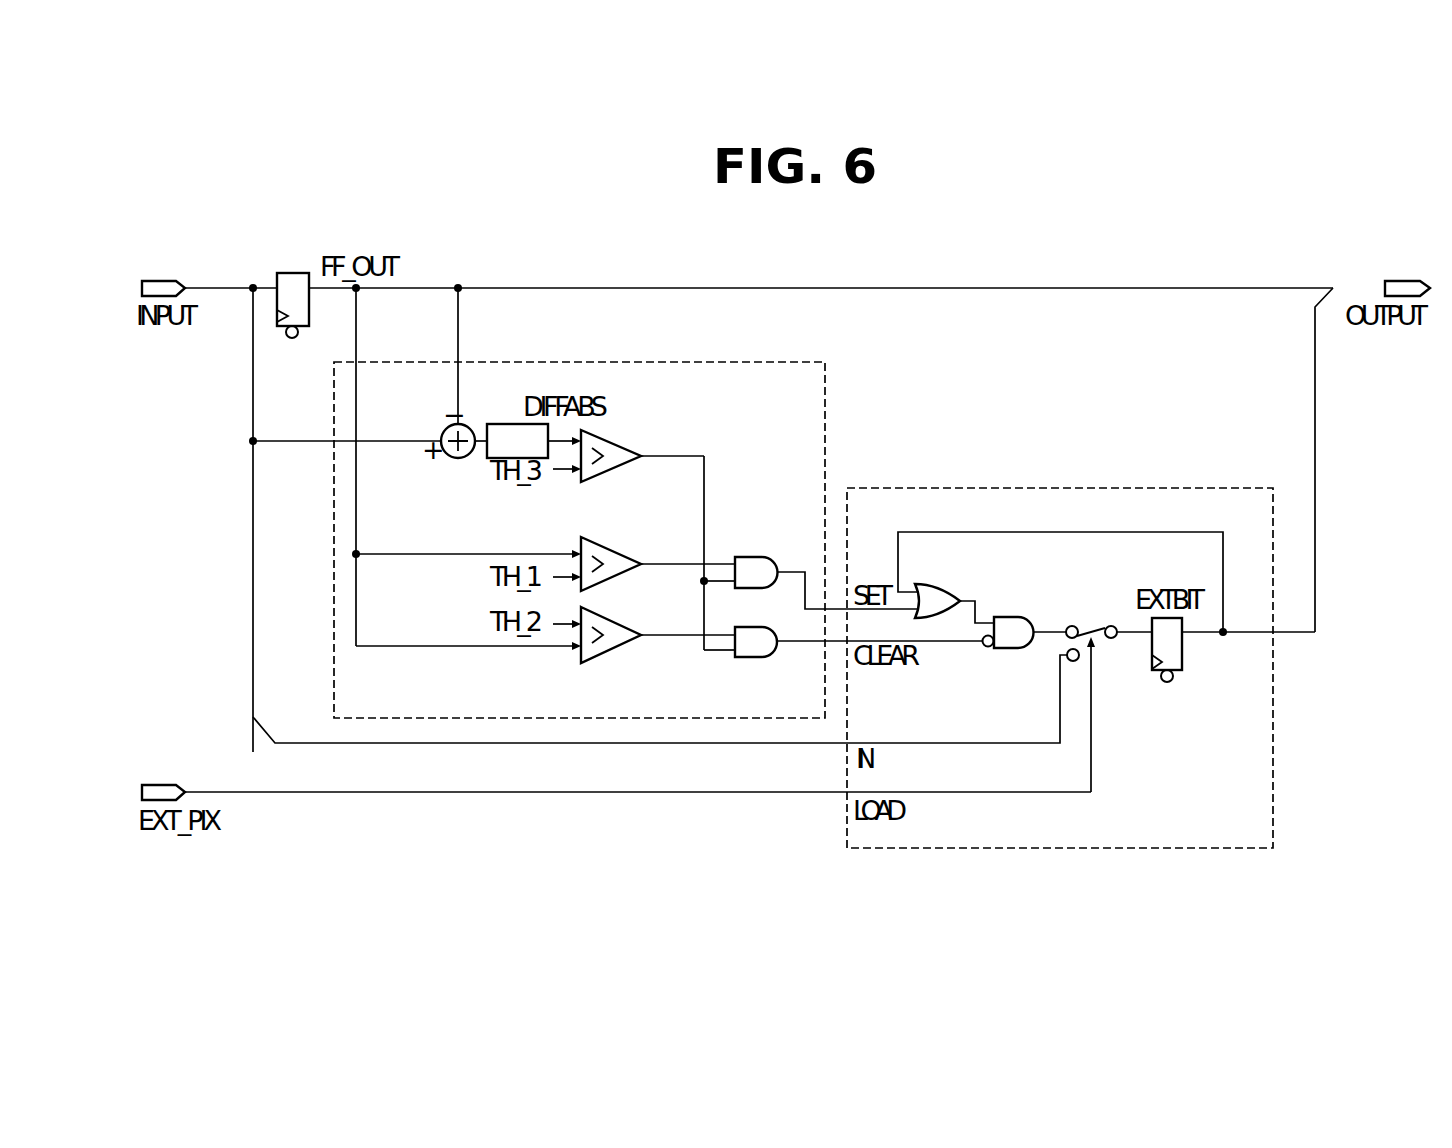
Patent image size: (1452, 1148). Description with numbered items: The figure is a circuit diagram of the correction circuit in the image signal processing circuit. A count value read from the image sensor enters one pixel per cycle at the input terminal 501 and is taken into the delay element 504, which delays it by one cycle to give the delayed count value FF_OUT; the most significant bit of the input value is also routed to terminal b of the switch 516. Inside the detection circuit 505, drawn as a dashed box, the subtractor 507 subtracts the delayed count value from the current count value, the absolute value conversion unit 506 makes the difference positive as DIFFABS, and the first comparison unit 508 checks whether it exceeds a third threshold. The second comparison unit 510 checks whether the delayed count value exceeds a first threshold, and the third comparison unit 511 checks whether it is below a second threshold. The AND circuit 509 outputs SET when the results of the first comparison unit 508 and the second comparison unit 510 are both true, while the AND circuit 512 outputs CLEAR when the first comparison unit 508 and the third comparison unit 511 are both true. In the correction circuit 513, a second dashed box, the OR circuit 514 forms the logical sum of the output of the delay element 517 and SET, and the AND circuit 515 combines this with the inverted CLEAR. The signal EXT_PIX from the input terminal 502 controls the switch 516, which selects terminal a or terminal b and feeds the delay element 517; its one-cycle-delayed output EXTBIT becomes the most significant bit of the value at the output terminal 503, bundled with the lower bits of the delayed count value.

The input terminal 501 is at (157, 279).
The input terminal 502 is at (157, 784).
The output terminal 503 is at (1395, 279).
The delay element 504 is at (287, 271).
The detection circuit 505 is at (797, 361).
The absolute value conversion unit 506 is at (496, 423).
The subtractor 507 is at (457, 459).
The first comparison unit 508 is at (656, 425).
The AND circuit 509 is at (749, 556).
The second comparison unit 510 is at (619, 549).
The third comparison unit 511 is at (619, 619).
The AND circuit 512 is at (752, 662).
The correction circuit 513 is at (1215, 487).
The OR circuit 514 is at (944, 588).
The AND circuit 515 is at (1010, 616).
The switch 516 is at (1090, 624).
The delay element 517 is at (1185, 655).